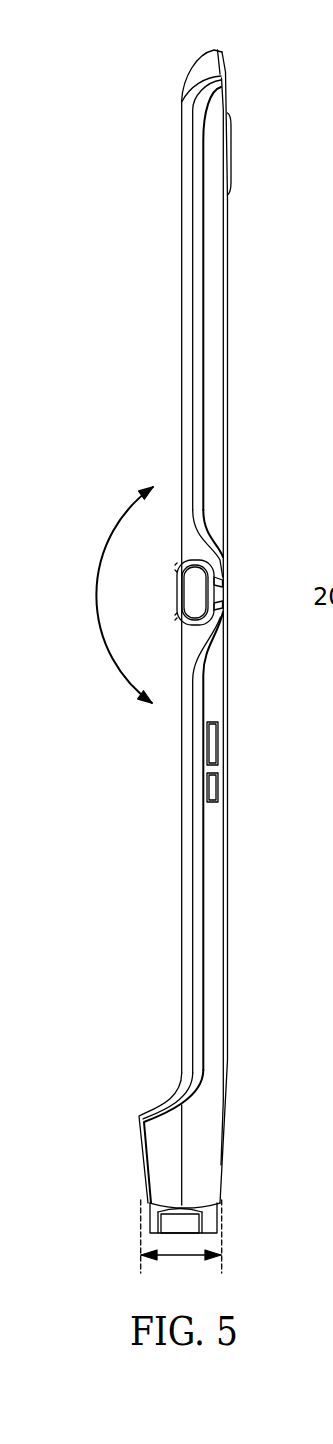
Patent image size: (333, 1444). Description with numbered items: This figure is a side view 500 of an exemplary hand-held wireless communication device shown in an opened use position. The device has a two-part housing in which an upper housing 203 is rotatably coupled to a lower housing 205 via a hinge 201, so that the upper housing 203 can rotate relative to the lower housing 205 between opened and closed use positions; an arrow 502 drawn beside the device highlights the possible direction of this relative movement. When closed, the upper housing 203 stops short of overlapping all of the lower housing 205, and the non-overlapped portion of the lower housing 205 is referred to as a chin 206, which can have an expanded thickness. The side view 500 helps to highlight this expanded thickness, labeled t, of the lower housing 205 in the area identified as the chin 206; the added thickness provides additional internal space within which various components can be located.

The side view 500 is at (260, 44).
The upper housing 203 is at (210, 289).
The hinge 201 is at (200, 587).
The lower housing 205 is at (209, 886).
The chin 206 is at (207, 1147).
The arrow 502 is at (97, 594).